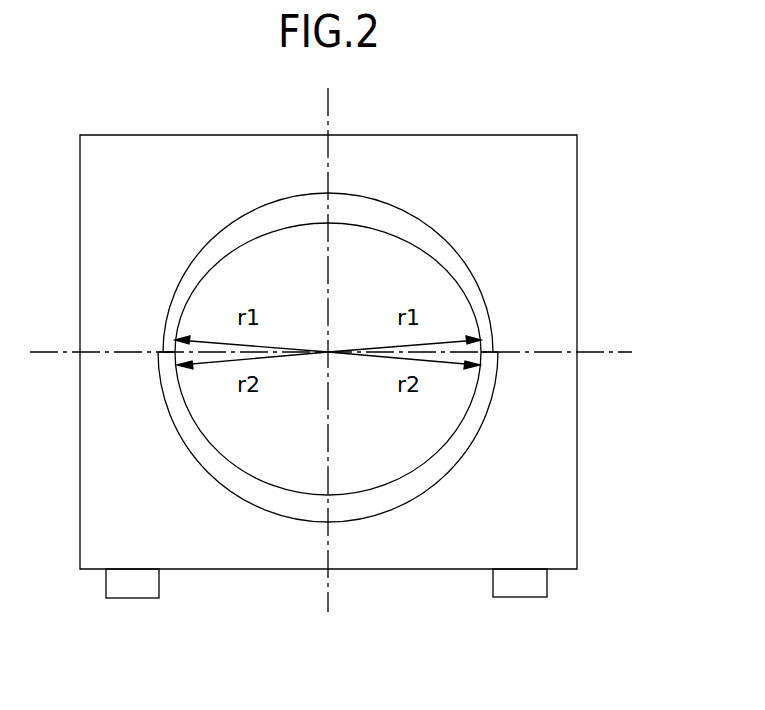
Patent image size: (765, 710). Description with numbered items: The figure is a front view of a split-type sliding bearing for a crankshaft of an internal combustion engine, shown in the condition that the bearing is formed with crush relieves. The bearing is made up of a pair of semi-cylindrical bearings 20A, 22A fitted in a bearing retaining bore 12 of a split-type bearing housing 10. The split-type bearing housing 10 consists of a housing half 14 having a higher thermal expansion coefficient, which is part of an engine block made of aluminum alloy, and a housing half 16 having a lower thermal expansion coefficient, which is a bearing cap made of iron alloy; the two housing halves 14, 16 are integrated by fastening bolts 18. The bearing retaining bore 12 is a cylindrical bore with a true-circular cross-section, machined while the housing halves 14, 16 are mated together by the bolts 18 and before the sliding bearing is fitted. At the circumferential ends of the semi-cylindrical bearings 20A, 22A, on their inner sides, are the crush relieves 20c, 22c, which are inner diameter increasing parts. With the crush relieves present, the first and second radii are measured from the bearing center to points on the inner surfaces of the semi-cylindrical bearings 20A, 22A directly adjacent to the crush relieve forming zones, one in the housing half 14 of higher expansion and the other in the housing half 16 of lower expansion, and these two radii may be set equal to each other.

The split-type bearing housing 10 is at (460, 116).
The bearing retaining bore 12 is at (426, 218).
The housing half 14 is at (565, 243).
The housing half 16 is at (567, 460).
The fastening bolts 18 is at (133, 590).
The semi-cylindrical bearing 20A is at (237, 237).
The crush relieve 20c is at (165, 346).
The semi-cylindrical bearing 22A is at (244, 486).
The crush relieve 22c is at (165, 360).